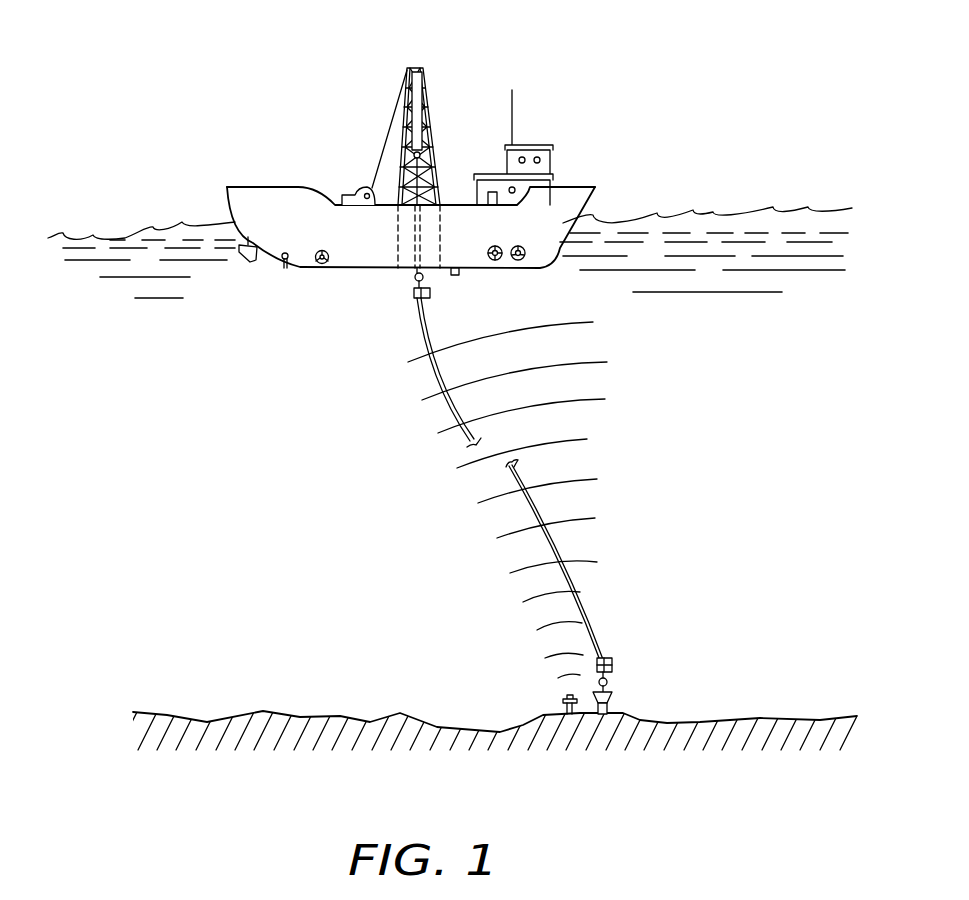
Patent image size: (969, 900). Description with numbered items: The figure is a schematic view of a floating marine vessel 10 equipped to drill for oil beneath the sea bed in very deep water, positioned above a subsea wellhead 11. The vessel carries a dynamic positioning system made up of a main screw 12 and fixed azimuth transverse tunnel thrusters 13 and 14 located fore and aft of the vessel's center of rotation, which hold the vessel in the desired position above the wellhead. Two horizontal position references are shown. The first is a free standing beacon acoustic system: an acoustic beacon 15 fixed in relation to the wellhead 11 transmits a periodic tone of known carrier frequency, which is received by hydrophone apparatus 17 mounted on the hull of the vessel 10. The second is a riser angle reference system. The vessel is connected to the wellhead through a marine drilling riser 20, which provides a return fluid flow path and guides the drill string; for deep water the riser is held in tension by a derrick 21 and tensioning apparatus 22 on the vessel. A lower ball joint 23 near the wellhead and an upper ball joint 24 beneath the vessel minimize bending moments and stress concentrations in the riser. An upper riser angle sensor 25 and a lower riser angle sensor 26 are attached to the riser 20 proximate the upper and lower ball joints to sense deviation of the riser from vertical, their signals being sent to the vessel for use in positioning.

The floating marine vessel 10 is at (568, 192).
The subsea wellhead 11 is at (606, 710).
The main screw 12 is at (285, 268).
The forward transverse thruster 13 is at (323, 265).
The aft transverse thruster 14 is at (497, 261).
The acoustic beacon 15 is at (563, 705).
The hydrophone apparatus 17 is at (457, 275).
The marine drilling riser 20 is at (522, 477).
The derrick 21 is at (423, 100).
The tensioning apparatus 22 is at (363, 188).
The lower ball joint 23 is at (608, 682).
The upper ball joint 24 is at (414, 279).
The upper riser angle sensor 25 is at (431, 297).
The lower riser angle sensor 26 is at (612, 668).